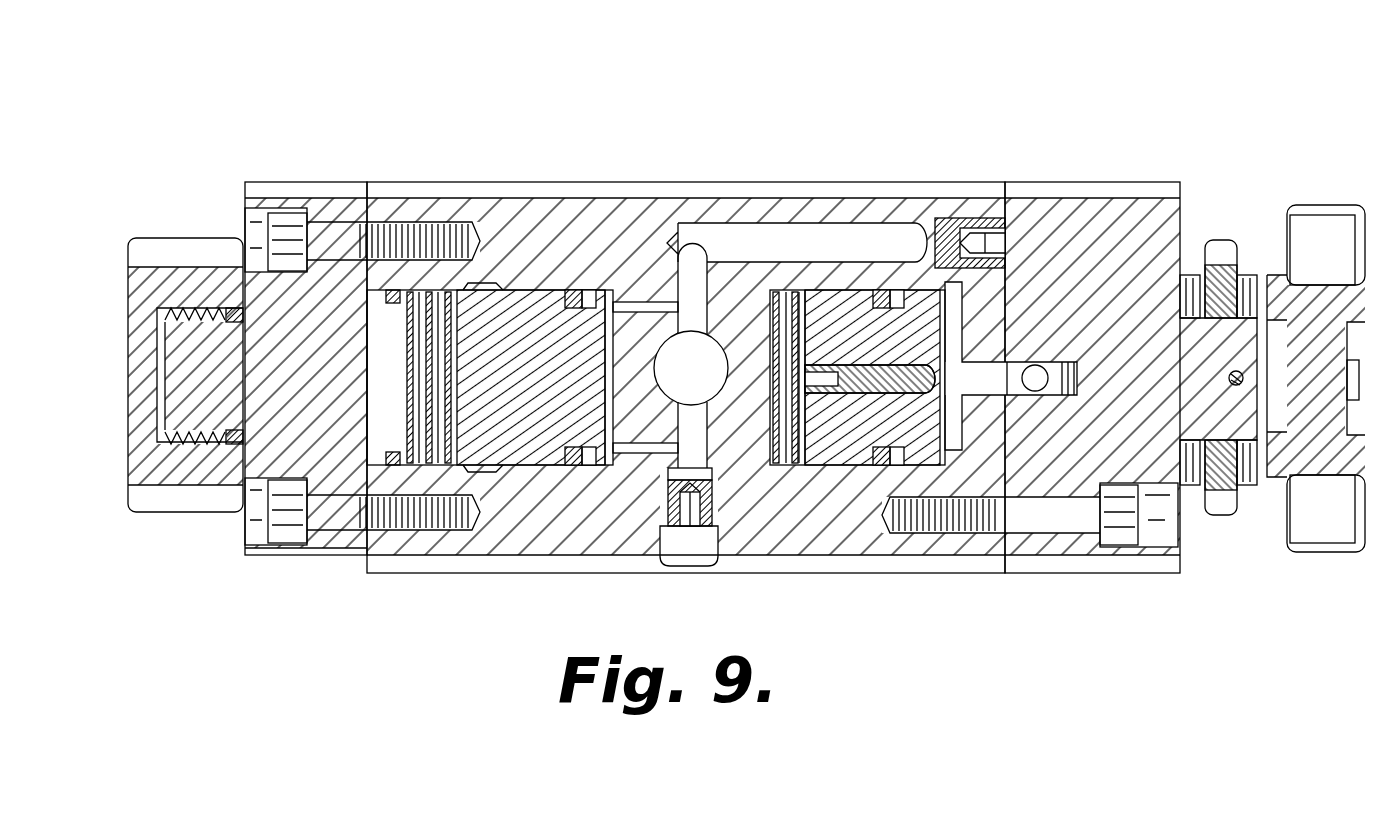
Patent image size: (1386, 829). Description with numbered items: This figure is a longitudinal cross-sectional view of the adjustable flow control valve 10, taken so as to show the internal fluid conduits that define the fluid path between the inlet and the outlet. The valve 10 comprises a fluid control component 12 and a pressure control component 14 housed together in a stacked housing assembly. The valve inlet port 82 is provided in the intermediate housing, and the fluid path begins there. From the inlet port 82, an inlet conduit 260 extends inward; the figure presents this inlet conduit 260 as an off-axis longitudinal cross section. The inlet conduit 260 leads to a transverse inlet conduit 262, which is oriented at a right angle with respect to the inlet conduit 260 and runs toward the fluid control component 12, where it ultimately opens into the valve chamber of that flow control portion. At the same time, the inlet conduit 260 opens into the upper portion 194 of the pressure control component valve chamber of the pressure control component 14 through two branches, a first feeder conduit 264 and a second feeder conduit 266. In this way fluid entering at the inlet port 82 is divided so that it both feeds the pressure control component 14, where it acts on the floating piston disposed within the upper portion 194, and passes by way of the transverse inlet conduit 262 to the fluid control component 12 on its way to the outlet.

The adjustable flow control valve 10 is at (715, 332).
The fluid control component 12 is at (1119, 136).
The pressure control component 14 is at (299, 166).
The inlet port 82 is at (718, 398).
The upper portion of pressure control component valve chamber 194 is at (578, 300).
The inlet conduit 260 is at (698, 452).
The transverse inlet conduit 262 is at (808, 237).
The first feeder conduit 264 is at (640, 445).
The second feeder conduit 266 is at (620, 298).